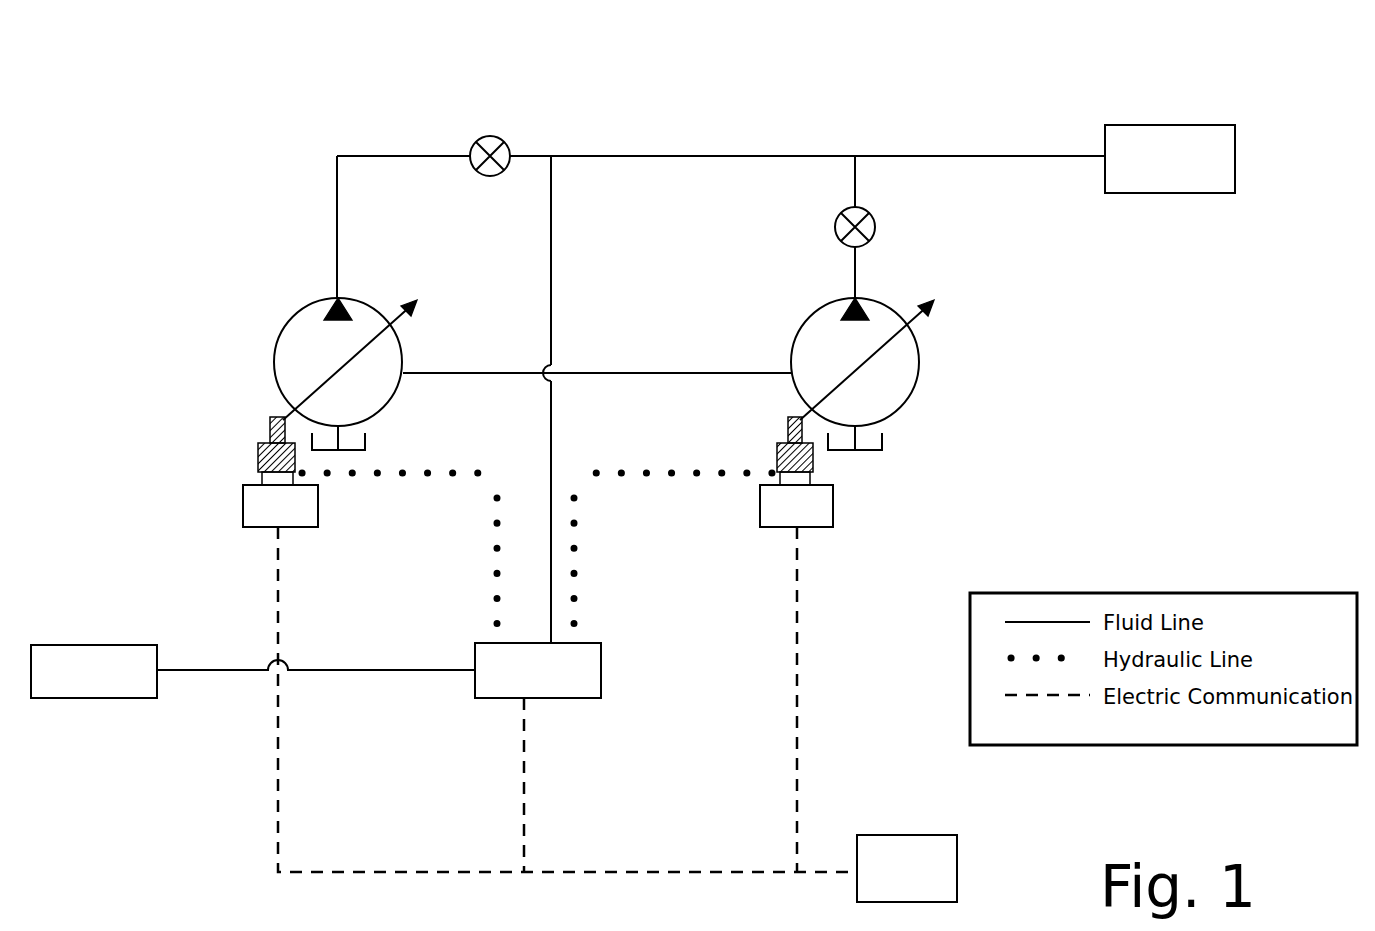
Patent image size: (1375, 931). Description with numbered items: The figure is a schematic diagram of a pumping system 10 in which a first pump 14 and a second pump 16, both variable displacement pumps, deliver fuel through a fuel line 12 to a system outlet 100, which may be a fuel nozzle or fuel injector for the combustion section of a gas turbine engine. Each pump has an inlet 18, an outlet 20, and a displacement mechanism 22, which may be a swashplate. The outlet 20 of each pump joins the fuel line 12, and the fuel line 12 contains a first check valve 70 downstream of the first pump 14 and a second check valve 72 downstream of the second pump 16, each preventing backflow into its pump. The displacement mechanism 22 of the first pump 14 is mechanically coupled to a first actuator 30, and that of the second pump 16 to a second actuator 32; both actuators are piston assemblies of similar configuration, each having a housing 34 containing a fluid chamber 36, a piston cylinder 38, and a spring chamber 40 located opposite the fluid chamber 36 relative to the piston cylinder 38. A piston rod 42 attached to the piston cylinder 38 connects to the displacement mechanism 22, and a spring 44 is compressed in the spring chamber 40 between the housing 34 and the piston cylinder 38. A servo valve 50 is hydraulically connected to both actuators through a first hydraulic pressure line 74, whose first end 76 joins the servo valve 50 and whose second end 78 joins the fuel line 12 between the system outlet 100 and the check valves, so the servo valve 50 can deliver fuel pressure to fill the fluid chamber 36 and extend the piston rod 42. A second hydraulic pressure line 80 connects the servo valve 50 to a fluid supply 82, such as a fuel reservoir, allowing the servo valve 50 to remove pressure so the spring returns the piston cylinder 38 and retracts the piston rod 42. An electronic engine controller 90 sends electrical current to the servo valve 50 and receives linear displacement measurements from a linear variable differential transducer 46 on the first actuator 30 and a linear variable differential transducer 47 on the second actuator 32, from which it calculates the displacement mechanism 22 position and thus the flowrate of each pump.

The pumping system 10 is at (912, 95).
The fuel line 12 is at (385, 154).
The first pump 14 is at (288, 320).
The second pump 16 is at (918, 375).
The inlet 18 is at (344, 428).
The outlet 20 is at (340, 299).
The displacement mechanism 22 is at (404, 318).
The first actuator 30 is at (297, 465).
The second actuator 32 is at (777, 467).
The housing 34 is at (260, 476).
The fluid chamber 36 is at (297, 476).
The piston cylinder 38 is at (259, 467).
The spring chamber 40 is at (262, 447).
The piston rod 42 is at (268, 440).
The spring 44 is at (259, 453).
The linear variable differential transducer 46 is at (280, 506).
The linear variable differential transducer 47 is at (796, 506).
The servo valve 50 is at (538, 670).
The first check valve 70 is at (495, 136).
The second check valve 72 is at (875, 224).
The first hydraulic pressure line 74 is at (553, 326).
The first end 76 is at (548, 640).
The second end 78 is at (554, 160).
The second hydraulic pressure line 80 is at (341, 675).
The fluid supply 82 is at (94, 671).
The electronic engine controller 90 is at (907, 868).
The system outlet 100 is at (1170, 159).